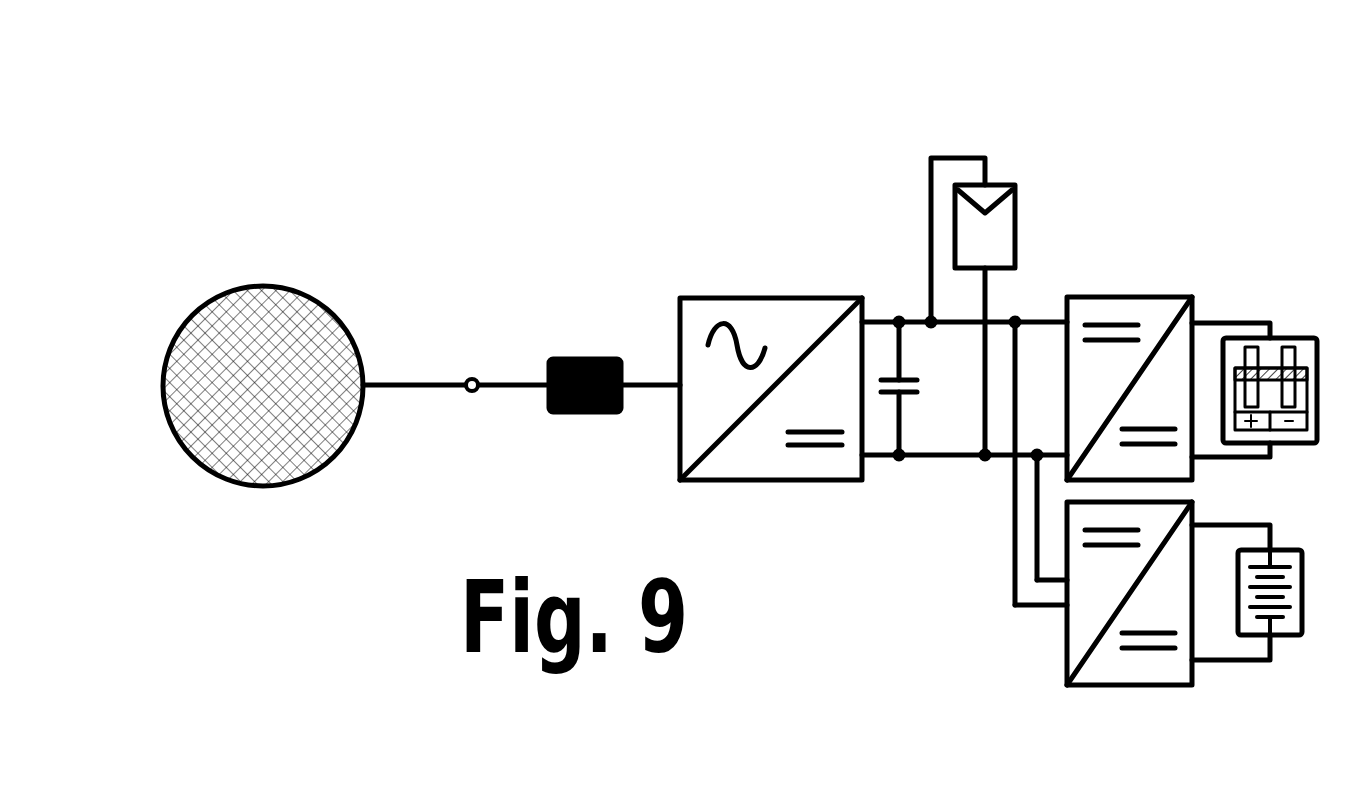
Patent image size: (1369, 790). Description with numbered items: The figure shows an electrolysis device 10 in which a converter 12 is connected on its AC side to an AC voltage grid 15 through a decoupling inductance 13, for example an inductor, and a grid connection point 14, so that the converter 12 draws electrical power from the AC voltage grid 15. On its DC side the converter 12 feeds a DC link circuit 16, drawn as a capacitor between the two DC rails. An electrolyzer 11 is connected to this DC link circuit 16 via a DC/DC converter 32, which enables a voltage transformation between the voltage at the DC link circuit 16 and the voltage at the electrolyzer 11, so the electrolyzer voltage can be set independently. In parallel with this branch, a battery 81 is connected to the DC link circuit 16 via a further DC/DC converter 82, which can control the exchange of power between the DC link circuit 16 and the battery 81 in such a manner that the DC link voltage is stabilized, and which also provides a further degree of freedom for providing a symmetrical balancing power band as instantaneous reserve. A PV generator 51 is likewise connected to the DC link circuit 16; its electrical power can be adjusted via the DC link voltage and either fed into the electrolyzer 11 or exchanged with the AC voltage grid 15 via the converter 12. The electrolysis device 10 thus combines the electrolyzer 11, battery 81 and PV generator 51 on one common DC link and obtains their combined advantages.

The electrolysis device 10 is at (700, 163).
The AC voltage grid 15 is at (198, 307).
The grid connection point 14 is at (468, 380).
The decoupling inductance 13 is at (572, 360).
The converter 12 is at (715, 298).
The DC link circuit 16 is at (893, 400).
The PV generator 51 is at (997, 182).
The DC/DC converter 32 is at (1142, 295).
The electrolyzer 11 is at (1285, 337).
The further DC/DC converter 82 is at (1067, 660).
The battery 81 is at (1287, 550).